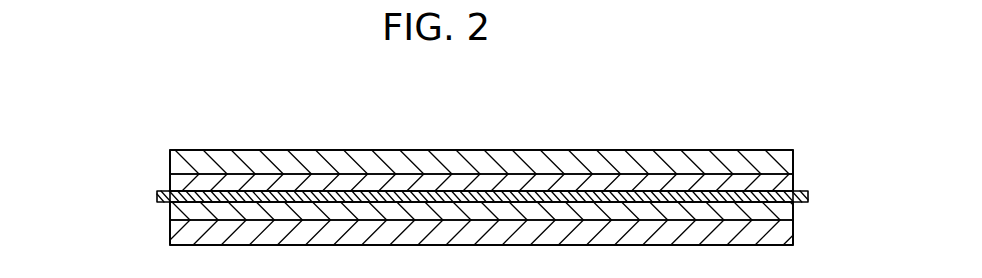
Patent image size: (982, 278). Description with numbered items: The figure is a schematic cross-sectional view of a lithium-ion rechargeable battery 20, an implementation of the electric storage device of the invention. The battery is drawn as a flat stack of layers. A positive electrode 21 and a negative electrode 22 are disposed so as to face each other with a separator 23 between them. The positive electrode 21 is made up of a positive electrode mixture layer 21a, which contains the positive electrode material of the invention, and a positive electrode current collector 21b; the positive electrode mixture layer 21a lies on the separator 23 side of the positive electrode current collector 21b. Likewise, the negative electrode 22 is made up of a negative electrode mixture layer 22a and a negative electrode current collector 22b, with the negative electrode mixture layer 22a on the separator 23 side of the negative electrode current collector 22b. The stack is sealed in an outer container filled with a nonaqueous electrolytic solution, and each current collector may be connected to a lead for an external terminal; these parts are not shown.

The lithium-ion rechargeable battery 20 is at (697, 128).
The positive electrode 21 is at (84, 113).
The positive electrode mixture layer 21a is at (177, 182).
The positive electrode current collector 21b is at (177, 163).
The negative electrode 22 is at (84, 198).
The negative electrode mixture layer 22a is at (177, 209).
The negative electrode current collector 22b is at (177, 233).
The separator 23 is at (808, 196).